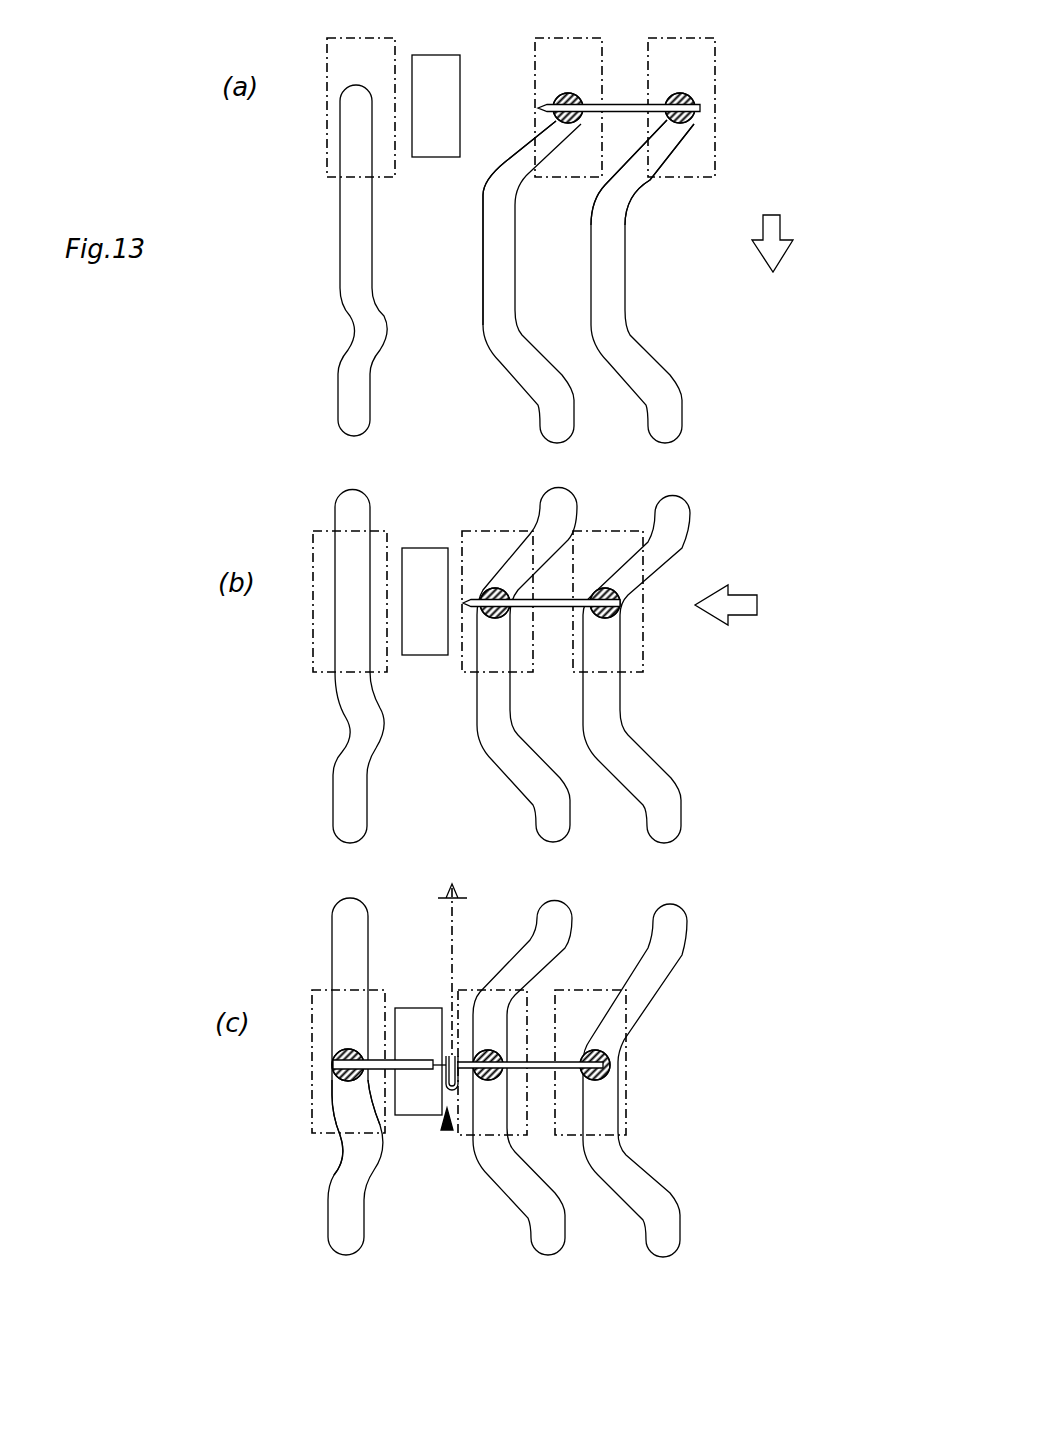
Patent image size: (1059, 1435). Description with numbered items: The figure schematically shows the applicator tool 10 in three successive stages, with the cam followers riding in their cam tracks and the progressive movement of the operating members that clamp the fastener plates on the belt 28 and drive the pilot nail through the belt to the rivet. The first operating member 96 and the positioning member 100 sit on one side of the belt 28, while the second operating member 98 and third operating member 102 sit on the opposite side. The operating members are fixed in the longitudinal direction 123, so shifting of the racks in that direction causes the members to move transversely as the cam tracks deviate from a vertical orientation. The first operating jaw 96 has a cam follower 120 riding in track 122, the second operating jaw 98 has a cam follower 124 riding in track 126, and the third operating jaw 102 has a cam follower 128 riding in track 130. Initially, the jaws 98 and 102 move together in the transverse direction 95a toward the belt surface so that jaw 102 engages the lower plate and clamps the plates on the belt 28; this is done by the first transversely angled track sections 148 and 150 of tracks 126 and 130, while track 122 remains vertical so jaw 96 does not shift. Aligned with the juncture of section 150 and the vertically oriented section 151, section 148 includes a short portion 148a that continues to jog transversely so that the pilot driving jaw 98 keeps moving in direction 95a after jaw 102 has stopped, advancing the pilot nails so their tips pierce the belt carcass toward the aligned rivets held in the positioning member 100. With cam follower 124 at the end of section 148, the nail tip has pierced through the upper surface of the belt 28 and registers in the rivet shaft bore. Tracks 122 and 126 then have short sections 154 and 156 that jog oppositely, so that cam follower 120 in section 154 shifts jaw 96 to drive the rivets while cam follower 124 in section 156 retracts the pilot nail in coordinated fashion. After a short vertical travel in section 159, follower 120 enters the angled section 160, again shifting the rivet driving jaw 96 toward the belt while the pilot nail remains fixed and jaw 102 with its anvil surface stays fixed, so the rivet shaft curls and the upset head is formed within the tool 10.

In FIG. 13c, the connector assembly 10 is at (447, 1132).
In FIG. 13c, the belt 28 is at (452, 920).
In FIG. 13b, the transverse direction 95a is at (738, 594).
In FIG. 13a, the first operating member 96 is at (329, 167).
In FIG. 13a, the second operating member 98 is at (660, 48).
In FIG. 13a, the positioning member 100 is at (428, 70).
In FIG. 13a, the third operating member 102 is at (548, 48).
In FIG. 13c, the cam follower 120 is at (330, 1082).
In FIG. 13a, the cam track 122 is at (353, 260).
In FIG. 13c, the cam track 122 is at (345, 1235).
In FIG. 13a, the longitudinal direction 123 is at (787, 247).
In FIG. 13a, the cam follower 124 is at (700, 108).
In FIG. 13c, the cam follower 124 is at (608, 1050).
In FIG. 13a, the cam track 126 is at (678, 415).
In FIG. 13c, the cam track 126 is at (663, 1228).
In FIG. 13a, the cam follower 128 is at (553, 103).
In FIG. 13a, the cam track 130 is at (522, 370).
In FIG. 13a, the first transversely angled track section 148 is at (638, 180).
In FIG. 13a, the short portion of track section 148a is at (642, 124).
In FIG. 13a, the first transversely angled track section 150 is at (505, 156).
In FIG. 13a, the vertically oriented track section 151 is at (488, 275).
In FIG. 13c, the short track section 154 is at (347, 1095).
In FIG. 13c, the short track section 156 is at (603, 1088).
In FIG. 13c, the track section 159 is at (353, 1115).
In FIG. 13c, the track section 160 is at (368, 1122).